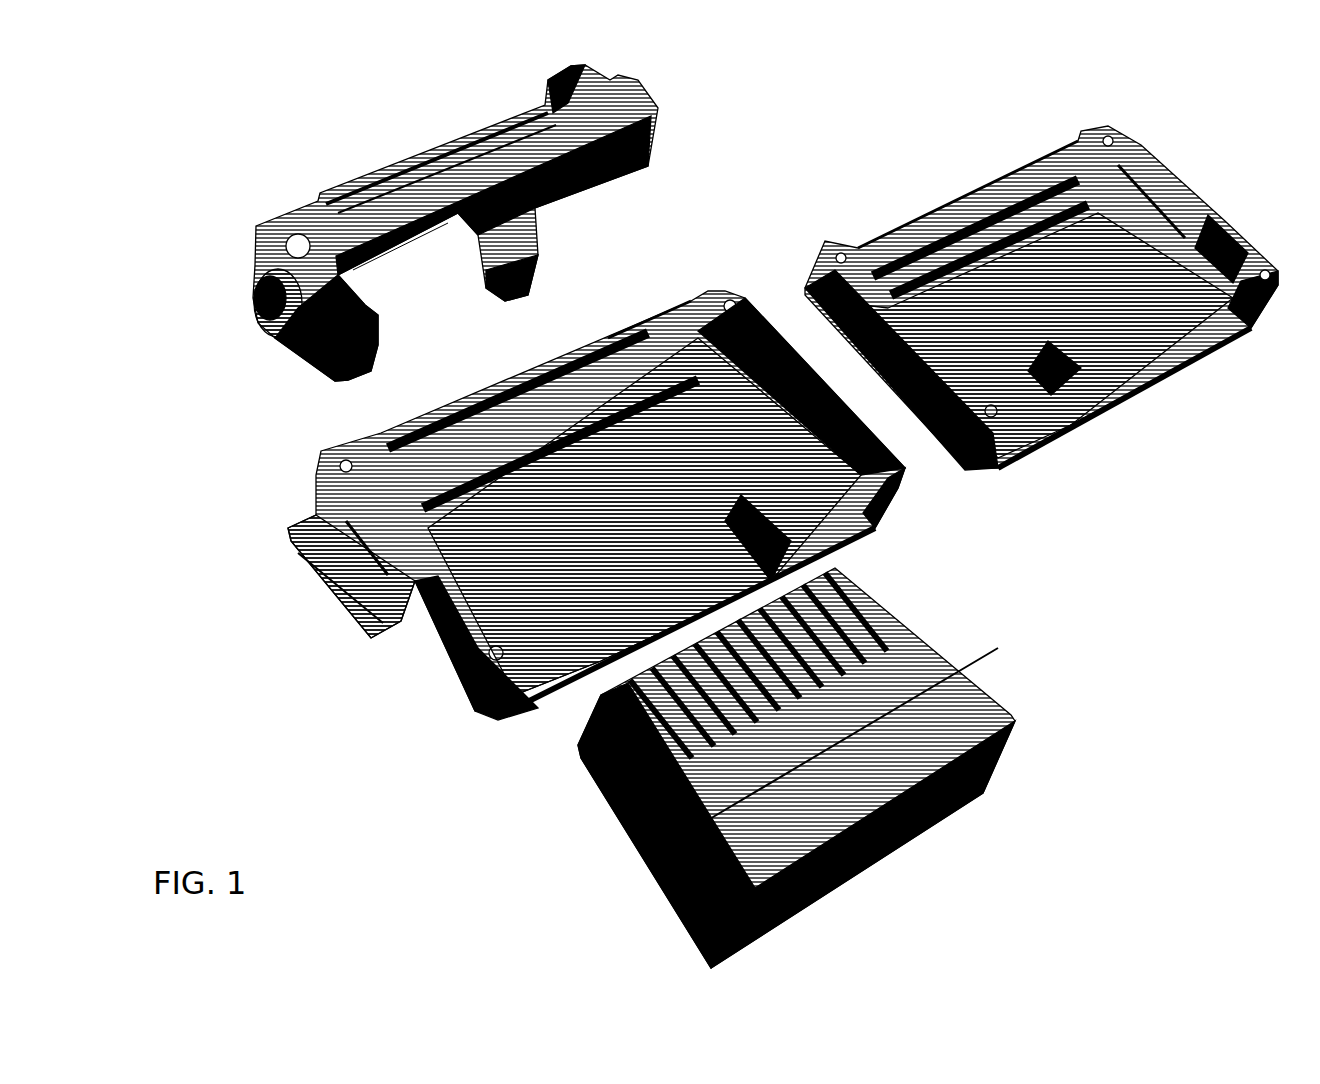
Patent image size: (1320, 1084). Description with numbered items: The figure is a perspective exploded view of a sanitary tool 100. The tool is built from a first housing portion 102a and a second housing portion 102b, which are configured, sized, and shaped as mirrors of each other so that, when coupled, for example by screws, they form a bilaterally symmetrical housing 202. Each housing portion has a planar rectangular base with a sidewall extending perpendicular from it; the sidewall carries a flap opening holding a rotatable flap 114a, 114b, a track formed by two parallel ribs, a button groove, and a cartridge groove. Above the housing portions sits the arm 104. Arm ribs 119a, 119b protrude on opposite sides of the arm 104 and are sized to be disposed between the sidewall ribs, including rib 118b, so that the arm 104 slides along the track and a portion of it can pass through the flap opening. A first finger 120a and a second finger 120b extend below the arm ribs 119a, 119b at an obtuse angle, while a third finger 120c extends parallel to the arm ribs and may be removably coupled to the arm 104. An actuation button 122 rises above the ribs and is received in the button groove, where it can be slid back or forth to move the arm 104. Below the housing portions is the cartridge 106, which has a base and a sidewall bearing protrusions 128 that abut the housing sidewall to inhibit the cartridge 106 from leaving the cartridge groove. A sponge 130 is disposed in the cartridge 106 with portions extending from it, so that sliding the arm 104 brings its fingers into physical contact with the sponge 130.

The sanitary tool 100 is at (212, 110).
The first housing portion 102a is at (595, 505).
The second housing portion 102b is at (1041, 292).
The arm 104 is at (419, 215).
The cartridge 106 is at (807, 768).
The flap 114a is at (314, 546).
The flap 114b is at (1152, 160).
The rib 118b is at (475, 468).
The arm rib 119a is at (434, 150).
The arm rib 119b is at (405, 248).
The first finger 120a is at (525, 208).
The second finger 120b is at (291, 332).
The third finger 120c is at (250, 264).
The actuation button 122 is at (556, 78).
The protrusions 128 is at (945, 666).
The sponge 130 is at (893, 641).
The housing 202 is at (806, 213).